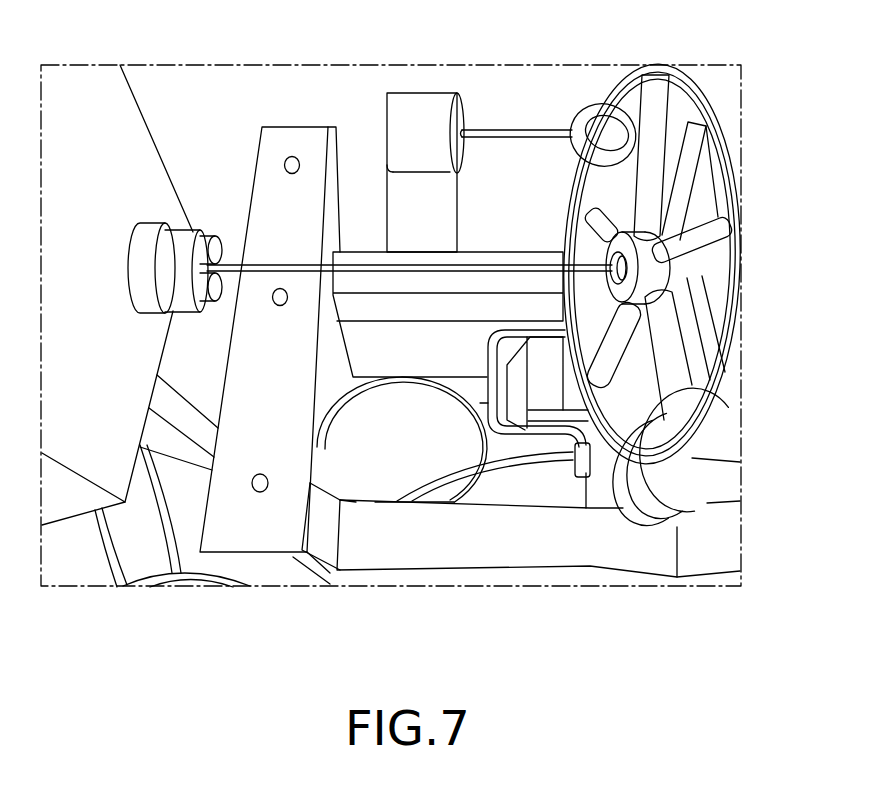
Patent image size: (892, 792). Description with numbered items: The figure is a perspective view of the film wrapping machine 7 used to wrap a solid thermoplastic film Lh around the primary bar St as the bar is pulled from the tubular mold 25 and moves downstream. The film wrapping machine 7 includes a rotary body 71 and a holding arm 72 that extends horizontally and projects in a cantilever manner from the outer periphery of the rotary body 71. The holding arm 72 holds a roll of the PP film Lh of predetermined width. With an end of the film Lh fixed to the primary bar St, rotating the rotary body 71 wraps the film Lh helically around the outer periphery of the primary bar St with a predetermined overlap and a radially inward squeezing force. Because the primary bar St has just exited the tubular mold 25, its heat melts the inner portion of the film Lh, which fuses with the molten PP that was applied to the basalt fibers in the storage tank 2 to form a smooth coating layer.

The storage tank 2 is at (89, 130).
The tubular mold 25 is at (183, 243).
The film Lh is at (418, 115).
The holding arm 72 is at (527, 133).
The primary bar St is at (517, 265).
The film wrapping machine 7 is at (680, 177).
The rotary body 71 is at (695, 240).